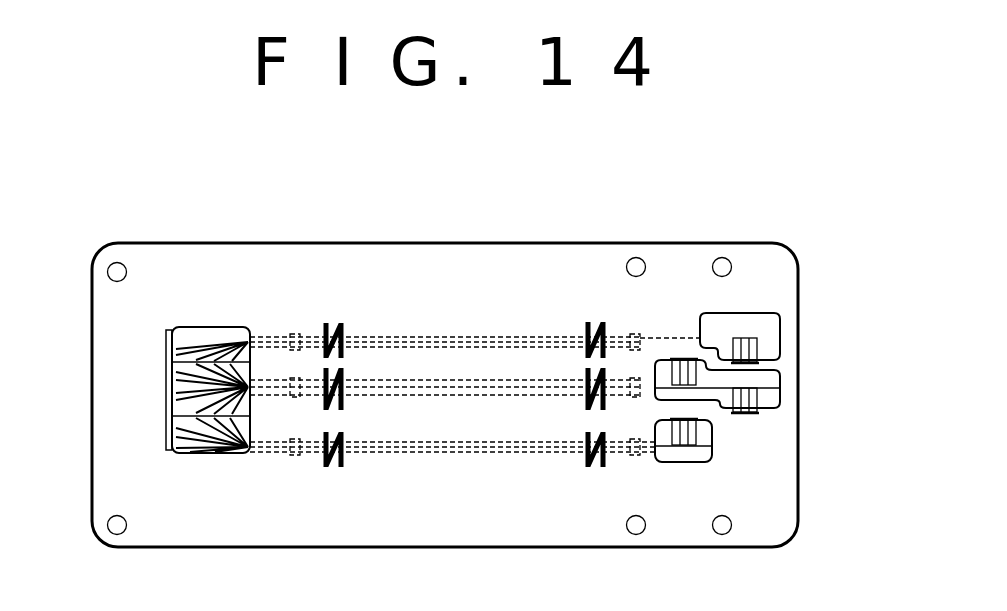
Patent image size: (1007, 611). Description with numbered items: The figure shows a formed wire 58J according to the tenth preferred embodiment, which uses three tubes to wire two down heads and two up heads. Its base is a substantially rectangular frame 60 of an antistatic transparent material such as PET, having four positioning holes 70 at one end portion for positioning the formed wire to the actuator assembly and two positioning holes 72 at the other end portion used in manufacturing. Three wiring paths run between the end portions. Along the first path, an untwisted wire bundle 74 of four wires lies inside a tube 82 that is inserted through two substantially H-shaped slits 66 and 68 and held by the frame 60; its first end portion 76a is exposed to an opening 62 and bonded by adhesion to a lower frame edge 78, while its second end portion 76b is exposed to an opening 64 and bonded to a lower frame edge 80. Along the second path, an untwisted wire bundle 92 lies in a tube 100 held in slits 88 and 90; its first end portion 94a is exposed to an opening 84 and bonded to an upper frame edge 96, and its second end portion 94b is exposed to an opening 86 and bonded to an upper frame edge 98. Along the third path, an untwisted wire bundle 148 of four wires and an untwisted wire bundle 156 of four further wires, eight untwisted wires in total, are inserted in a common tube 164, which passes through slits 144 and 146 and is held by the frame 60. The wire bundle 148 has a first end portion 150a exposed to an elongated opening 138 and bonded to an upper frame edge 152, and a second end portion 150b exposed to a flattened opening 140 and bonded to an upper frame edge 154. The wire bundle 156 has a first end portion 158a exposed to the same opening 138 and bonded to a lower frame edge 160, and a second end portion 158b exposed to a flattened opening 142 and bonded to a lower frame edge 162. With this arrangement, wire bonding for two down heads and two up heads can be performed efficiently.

The formed wire 58J is at (392, 243).
The frame 60 is at (446, 547).
The opening 62 is at (745, 340).
The opening 64 is at (228, 327).
The slit 66 is at (590, 322).
The slit 68 is at (331, 323).
The positioning holes 70 is at (636, 257).
The positioning holes 72 is at (117, 262).
The wire bundle 74 is at (423, 340).
The first end portion 76a is at (760, 354).
The second end portion 76b is at (185, 350).
The lower frame edge 78 is at (760, 364).
The lower frame edge 80 is at (166, 338).
The tube 82 is at (388, 387).
The opening 84 is at (682, 462).
The opening 86 is at (180, 456).
The slit 88 is at (591, 470).
The slit 90 is at (331, 470).
The wire bundle 92 is at (392, 452).
The first end portion 94a is at (700, 442).
The second end portion 94b is at (222, 456).
The upper frame edge 96 is at (672, 419).
The upper frame edge 98 is at (166, 442).
The tube 100 is at (460, 452).
The elongated opening 138 is at (770, 385).
The flattened opening 140 is at (176, 380).
The flattened opening 142 is at (176, 406).
The slit 144 is at (586, 402).
The slit 146 is at (343, 408).
The wire bundle 148 is at (431, 360).
The first end portion 150a is at (656, 372).
The second end portion 150b is at (248, 355).
The upper frame edge 152 is at (676, 358).
The upper frame edge 154 is at (176, 364).
The wire bundle 156 is at (502, 393).
The first end portion 158a is at (762, 404).
The second end portion 158b is at (250, 412).
The lower frame edge 160 is at (746, 416).
The lower frame edge 162 is at (176, 396).
The common tube 164 is at (451, 396).